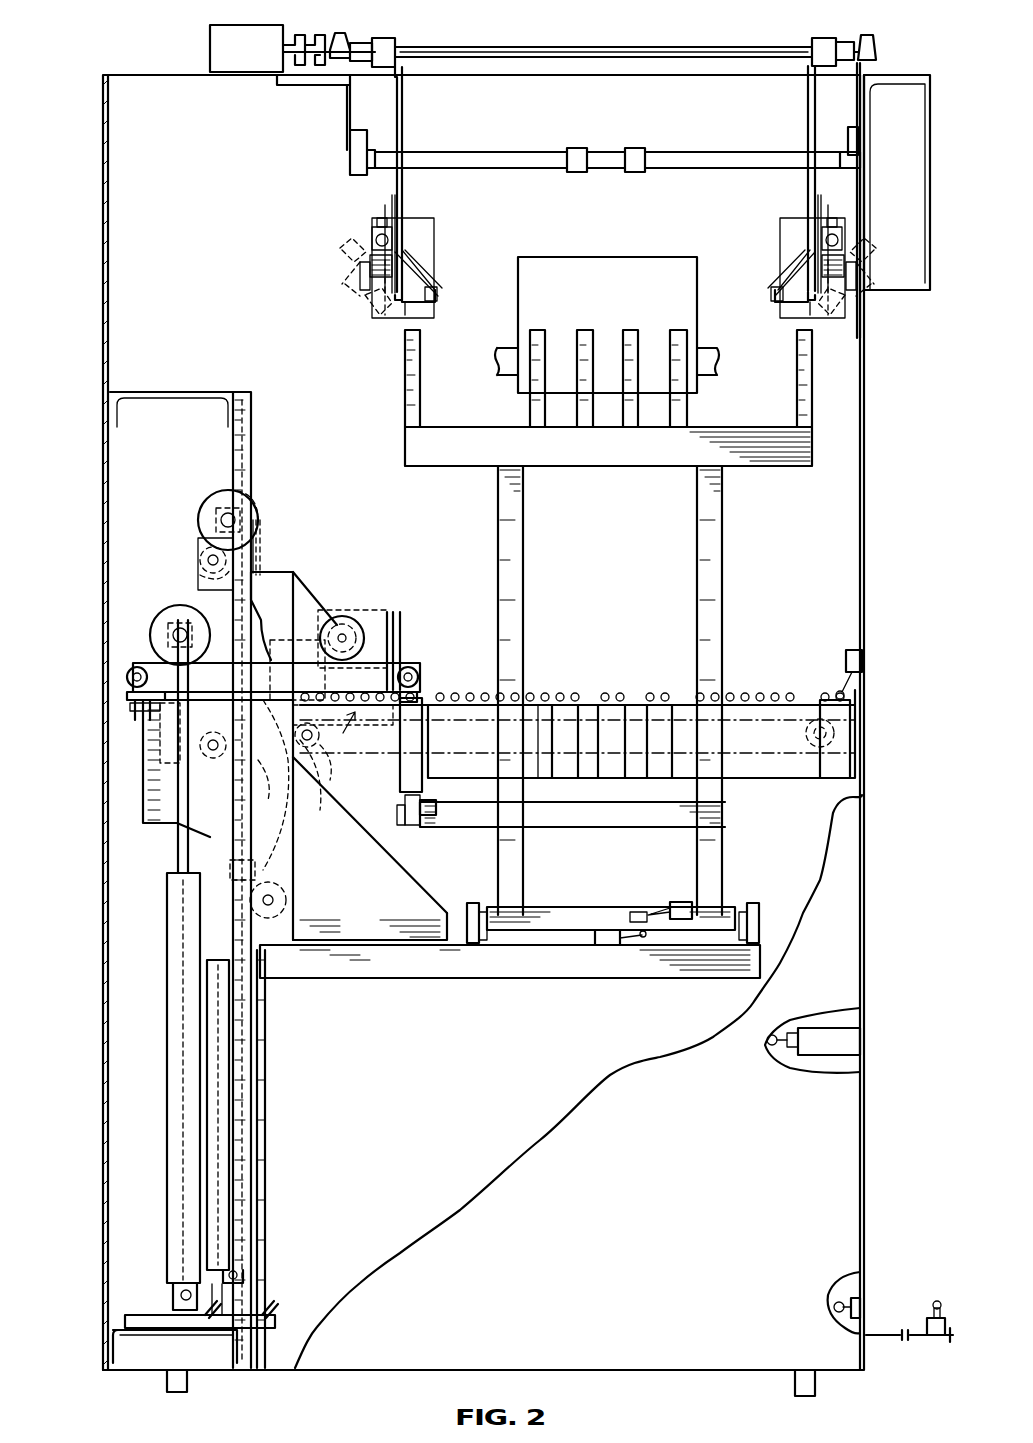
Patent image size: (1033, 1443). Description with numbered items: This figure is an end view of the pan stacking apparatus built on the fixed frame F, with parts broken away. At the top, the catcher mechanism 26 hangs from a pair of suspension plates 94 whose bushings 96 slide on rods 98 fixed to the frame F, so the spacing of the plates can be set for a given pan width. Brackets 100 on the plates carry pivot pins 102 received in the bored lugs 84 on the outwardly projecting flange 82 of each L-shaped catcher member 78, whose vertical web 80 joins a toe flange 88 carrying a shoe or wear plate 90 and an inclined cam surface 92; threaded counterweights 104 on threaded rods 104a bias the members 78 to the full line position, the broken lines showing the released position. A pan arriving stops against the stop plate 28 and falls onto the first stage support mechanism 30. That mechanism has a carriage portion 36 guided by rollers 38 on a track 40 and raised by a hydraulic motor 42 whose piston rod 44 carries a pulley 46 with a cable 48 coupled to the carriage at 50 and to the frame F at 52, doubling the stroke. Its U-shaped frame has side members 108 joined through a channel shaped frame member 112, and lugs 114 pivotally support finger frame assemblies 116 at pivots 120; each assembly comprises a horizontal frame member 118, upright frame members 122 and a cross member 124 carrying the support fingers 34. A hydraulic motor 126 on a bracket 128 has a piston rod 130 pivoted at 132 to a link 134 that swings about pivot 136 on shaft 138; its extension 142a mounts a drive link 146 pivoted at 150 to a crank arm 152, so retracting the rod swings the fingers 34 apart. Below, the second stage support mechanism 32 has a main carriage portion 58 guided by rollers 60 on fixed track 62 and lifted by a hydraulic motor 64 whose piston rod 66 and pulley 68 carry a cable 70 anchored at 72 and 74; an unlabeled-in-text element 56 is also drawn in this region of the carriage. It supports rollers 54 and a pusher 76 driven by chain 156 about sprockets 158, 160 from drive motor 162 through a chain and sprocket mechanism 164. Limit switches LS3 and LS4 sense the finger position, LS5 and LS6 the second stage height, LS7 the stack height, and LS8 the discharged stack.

The catcher mechanism 26 is at (800, 253).
The stop plate 28 is at (624, 287).
The first stage support mechanism 30 is at (460, 486).
The second stage support mechanism 32 is at (646, 663).
The support fingers 34 is at (790, 345).
The carriage portion 36 is at (415, 970).
The rollers 38 is at (293, 920).
The track 40 is at (270, 1013).
The hydraulic motor 42 is at (180, 1050).
The piston rod 44 is at (178, 855).
The pulley 46 is at (172, 628).
The cable 48 is at (132, 662).
The cable coupling to carriage 50 is at (143, 732).
The cable coupling to machine frame 52 is at (194, 1339).
The rollers 54 is at (622, 692).
The cam housing 56 is at (293, 818).
The main carriage portion 58 is at (402, 820).
The rollers 60 is at (155, 765).
The fixed track 62 is at (200, 587).
The hydraulic motor 64 is at (230, 1112).
The piston rod 66 is at (258, 537).
The pulley 68 is at (228, 505).
The cable 70 is at (268, 1057).
The cable coupling to second stage carriage 72 is at (198, 545).
The cable coupling to machine frame 74 is at (278, 1305).
The pusher 76 is at (396, 620).
The catcher members 78 is at (797, 317).
The vertical web 80 is at (762, 289).
The outwardly projecting flange 82 is at (385, 259).
The lugs 84 is at (842, 258).
The toe flange 88 is at (813, 315).
The shoe or wear plate 90 is at (745, 297).
The cam surface 92 is at (815, 283).
The suspension plates 94 is at (805, 123).
The bushings 96 is at (392, 45).
The rods 98 is at (657, 50).
The brackets 100 is at (835, 197).
The pivot pins 102 is at (840, 237).
The threaded counterweights 104 is at (857, 274).
The threaded rods 104a is at (860, 298).
The side members 108 is at (537, 975).
The channel shaped frame member 112 is at (145, 750).
The lugs 114 is at (760, 910).
The finger frame assemblies 116 is at (729, 623).
The horizontally extending frame member 118 is at (585, 908).
The pivots 120 is at (477, 944).
The upright frame members 122 is at (723, 548).
The cross member 124 is at (608, 456).
The hydraulic motor 126 is at (273, 863).
The bracket 128 is at (285, 890).
The piston rod 130 is at (271, 784).
The pivotal connection 132 is at (308, 635).
The link 134 is at (273, 602).
The pivot 136 is at (128, 676).
The shaft 138 is at (130, 665).
The outwardly projecting extension 142a is at (420, 690).
The drive link 146 is at (426, 742).
The pivotal connection 150 is at (410, 823).
The crank arm 152 is at (430, 815).
The chain 156 is at (538, 718).
The drive sprocket 158 is at (325, 772).
The end sprocket 160 is at (798, 738).
The drive motor 162 is at (350, 618).
The chain and sprocket mechanism 164 is at (344, 727).
The limit switch LS3 is at (674, 902).
The limit switch LS4 is at (613, 947).
The limit switch LS5 is at (853, 650).
The limit switch LS6 is at (852, 1298).
The limit switch LS7 is at (792, 1032).
The limit switch LS8 is at (937, 1335).
The actuator A is at (637, 911).
The fixed frame F is at (114, 1244).